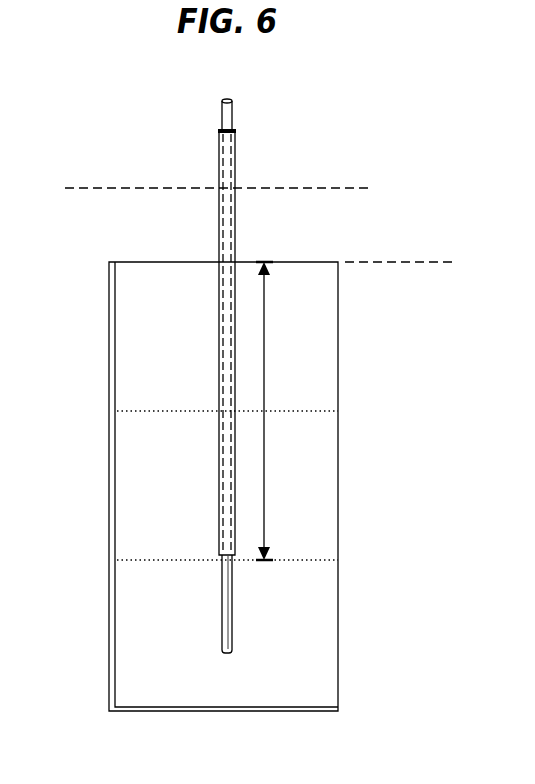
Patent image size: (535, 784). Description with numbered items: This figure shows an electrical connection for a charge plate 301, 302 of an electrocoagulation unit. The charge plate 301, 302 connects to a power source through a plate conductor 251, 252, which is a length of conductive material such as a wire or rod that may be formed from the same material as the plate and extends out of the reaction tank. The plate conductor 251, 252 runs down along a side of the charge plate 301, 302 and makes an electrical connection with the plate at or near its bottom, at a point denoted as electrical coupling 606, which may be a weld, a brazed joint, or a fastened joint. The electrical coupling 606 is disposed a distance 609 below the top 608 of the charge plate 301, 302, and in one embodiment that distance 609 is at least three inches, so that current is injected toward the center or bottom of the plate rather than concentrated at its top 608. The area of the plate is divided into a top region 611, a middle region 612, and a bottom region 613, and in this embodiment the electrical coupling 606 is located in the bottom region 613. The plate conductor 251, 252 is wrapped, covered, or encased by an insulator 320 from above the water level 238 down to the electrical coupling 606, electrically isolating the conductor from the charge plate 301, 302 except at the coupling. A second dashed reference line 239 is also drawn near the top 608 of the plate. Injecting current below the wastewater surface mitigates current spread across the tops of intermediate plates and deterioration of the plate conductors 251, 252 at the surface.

The plate conductor 251 is at (173, 115).
The plate conductor 252 is at (218, 123).
The insulator 320 is at (236, 167).
The water level 238 is at (348, 188).
The container top reference plane 239 is at (406, 262).
The top of charge plate 608 is at (153, 251).
The distance 609 is at (264, 375).
The top region 611 is at (103, 330).
The middle region 612 is at (102, 476).
The bottom region 613 is at (103, 625).
The charge plate 301 is at (292, 486).
The charge plate 302 is at (338, 486).
The electrical coupling 606 is at (233, 606).